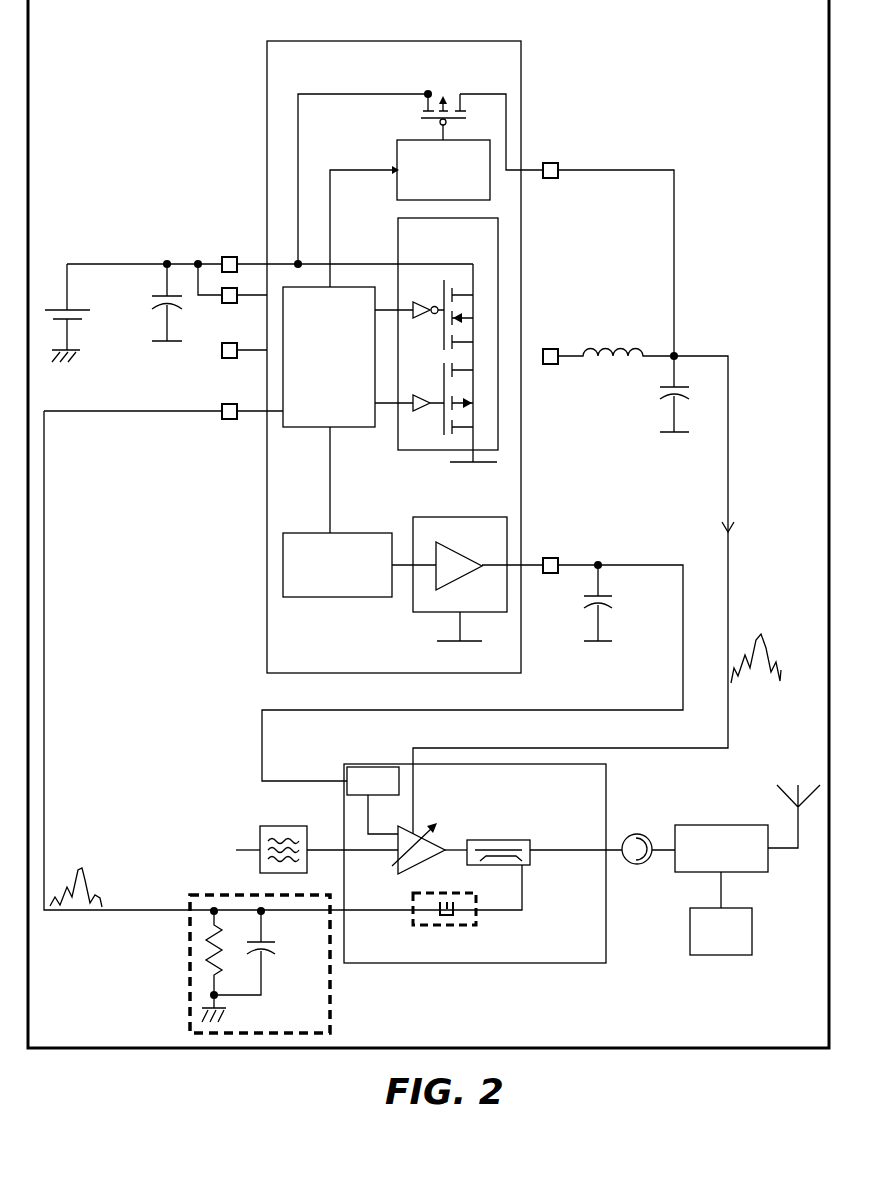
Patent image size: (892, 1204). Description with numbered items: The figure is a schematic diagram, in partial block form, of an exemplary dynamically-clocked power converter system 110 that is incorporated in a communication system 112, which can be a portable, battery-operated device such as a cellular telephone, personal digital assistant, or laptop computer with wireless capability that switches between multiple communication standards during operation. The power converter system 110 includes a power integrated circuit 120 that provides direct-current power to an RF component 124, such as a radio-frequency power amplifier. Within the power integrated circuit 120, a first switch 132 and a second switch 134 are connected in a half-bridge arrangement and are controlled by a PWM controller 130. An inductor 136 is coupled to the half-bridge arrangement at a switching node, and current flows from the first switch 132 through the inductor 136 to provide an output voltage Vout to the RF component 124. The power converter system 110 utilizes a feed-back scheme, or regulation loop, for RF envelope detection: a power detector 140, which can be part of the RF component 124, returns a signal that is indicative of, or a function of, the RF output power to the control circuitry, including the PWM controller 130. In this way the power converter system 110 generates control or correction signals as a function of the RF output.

The power converter system 110 is at (686, 103).
The communication system 112 is at (617, 1050).
The power integrated circuit 120 is at (521, 58).
The RF component 124 is at (606, 775).
The PWM controller 130 is at (298, 447).
The first switch 132 is at (475, 307).
The second switch 134 is at (473, 418).
The inductor 136 is at (612, 350).
The power detector 140 is at (475, 917).